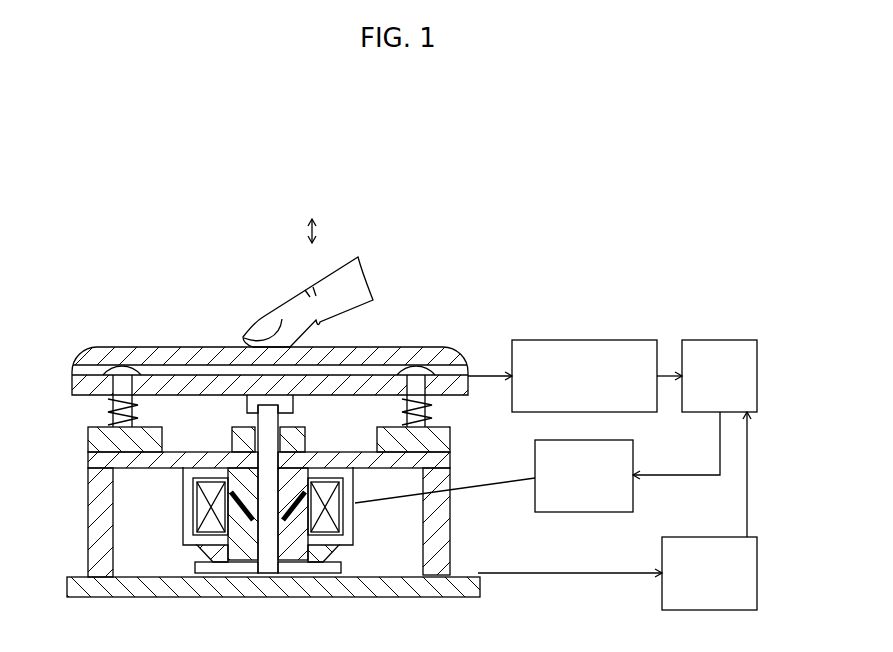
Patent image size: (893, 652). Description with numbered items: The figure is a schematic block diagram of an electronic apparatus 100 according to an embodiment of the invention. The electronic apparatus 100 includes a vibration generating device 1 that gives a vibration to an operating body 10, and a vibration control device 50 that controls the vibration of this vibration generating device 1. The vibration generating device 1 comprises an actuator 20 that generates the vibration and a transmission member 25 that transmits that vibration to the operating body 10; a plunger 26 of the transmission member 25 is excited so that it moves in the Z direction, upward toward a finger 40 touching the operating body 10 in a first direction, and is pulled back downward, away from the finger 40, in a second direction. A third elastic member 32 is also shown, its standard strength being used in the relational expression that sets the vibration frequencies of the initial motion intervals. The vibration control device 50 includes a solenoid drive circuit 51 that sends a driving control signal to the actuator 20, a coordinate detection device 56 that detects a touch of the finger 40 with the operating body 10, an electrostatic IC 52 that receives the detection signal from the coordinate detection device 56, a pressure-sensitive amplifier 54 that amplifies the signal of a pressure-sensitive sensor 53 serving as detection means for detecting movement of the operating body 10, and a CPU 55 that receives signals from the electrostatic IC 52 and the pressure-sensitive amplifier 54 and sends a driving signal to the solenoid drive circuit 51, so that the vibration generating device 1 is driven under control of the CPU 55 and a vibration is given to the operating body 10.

The electronic apparatus 100 is at (550, 251).
The vibration generating device 1 is at (447, 330).
The operating body 10 is at (165, 347).
The finger 40 is at (302, 296).
The coordinate detection device 56 is at (389, 347).
The actuator 20 is at (357, 505).
The transmission member 25 is at (210, 577).
The plunger 26 is at (291, 598).
The pressure-sensitive sensor 53 is at (308, 597).
The third elastic member 32 is at (358, 598).
The vibration control device 50 is at (667, 326).
The solenoid drive circuit 51 is at (635, 458).
The electrostatic IC 52 is at (583, 340).
The pressure-sensitive amplifier 54 is at (692, 537).
The CPU 55 is at (703, 340).